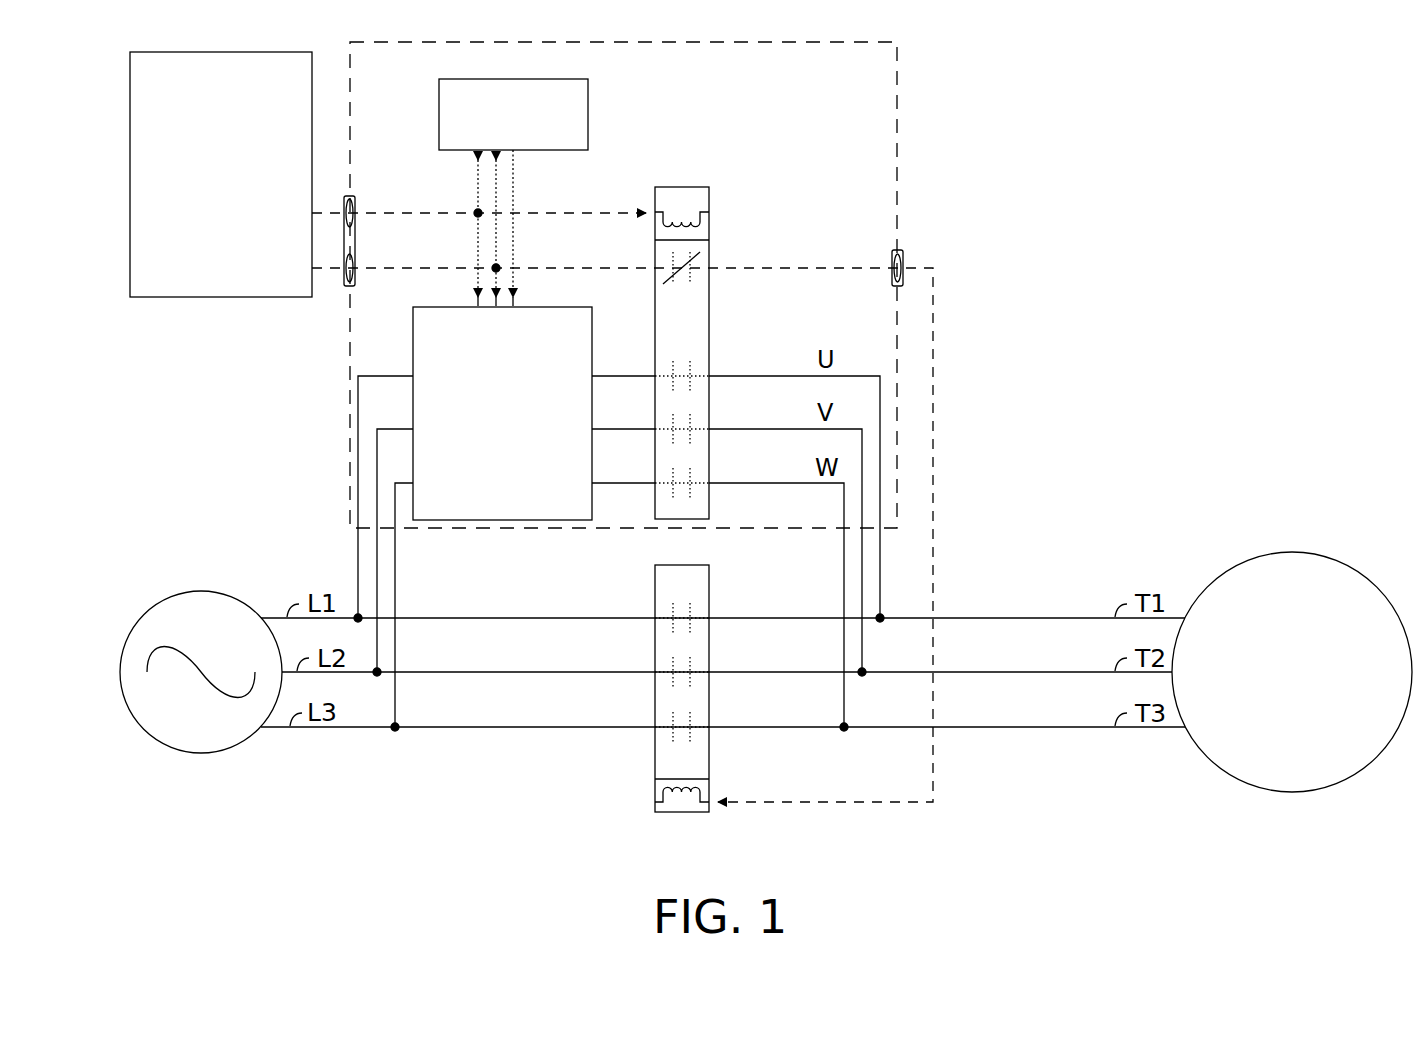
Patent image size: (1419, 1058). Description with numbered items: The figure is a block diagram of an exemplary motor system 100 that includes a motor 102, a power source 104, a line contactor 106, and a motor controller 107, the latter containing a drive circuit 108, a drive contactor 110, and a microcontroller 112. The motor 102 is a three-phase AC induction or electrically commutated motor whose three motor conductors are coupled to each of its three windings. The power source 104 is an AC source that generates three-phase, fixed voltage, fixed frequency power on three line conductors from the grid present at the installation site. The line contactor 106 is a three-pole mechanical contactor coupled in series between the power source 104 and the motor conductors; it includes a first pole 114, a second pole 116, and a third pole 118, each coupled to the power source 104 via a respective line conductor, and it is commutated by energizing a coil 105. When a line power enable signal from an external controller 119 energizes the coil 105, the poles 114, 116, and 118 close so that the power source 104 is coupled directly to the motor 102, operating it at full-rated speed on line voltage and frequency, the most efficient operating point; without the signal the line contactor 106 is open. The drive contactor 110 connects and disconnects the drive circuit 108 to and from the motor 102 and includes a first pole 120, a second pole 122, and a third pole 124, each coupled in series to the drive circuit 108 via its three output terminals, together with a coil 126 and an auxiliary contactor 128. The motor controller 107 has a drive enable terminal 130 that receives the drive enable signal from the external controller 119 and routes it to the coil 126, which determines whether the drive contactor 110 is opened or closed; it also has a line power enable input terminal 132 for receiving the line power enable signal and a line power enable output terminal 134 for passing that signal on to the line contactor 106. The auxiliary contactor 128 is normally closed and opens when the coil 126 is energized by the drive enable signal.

The motor system 100 is at (1208, 117).
The motor 102 is at (1292, 672).
The power source 104 is at (196, 592).
The coil 105 is at (663, 794).
The line contactor 106 is at (635, 589).
The motor controller 107 is at (847, 42).
The drive circuit 108 is at (502, 413).
The drive contactor 110 is at (741, 164).
The microcontroller 112 is at (532, 79).
The first pole 114 is at (691, 610).
The second pole 116 is at (691, 664).
The third pole 118 is at (691, 719).
The external controller 119 is at (221, 174).
The first pole 120 is at (691, 368).
The second pole 122 is at (691, 421).
The third pole 124 is at (691, 475).
The coil 126 is at (703, 224).
The auxiliary contactor 128 is at (671, 258).
The drive enable terminal 130 is at (356, 204).
The line power enable input terminal 132 is at (356, 258).
The line power enable output terminal 134 is at (893, 254).